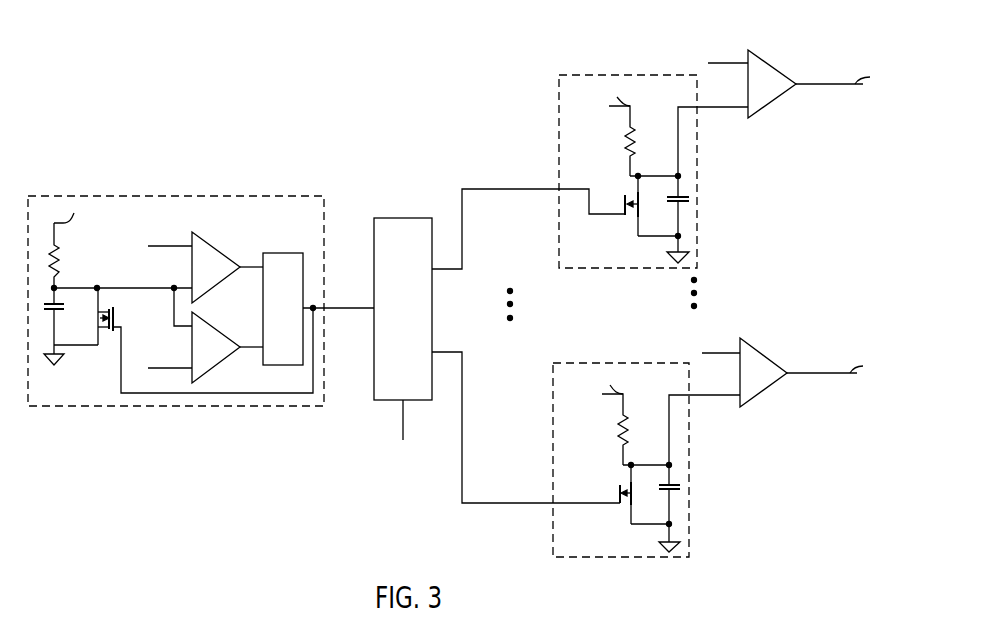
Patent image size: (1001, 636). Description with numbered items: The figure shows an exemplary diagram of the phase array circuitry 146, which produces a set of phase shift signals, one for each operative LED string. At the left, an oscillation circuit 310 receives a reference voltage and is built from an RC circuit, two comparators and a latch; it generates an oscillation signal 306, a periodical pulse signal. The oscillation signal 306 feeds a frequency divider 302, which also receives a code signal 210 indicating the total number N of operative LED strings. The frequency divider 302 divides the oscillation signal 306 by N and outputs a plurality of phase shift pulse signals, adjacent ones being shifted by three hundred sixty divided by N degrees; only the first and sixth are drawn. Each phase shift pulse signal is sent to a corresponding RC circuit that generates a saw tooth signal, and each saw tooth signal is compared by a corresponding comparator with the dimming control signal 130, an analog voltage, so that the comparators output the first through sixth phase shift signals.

The phase array circuitry 146 is at (94, 95).
The oscillation circuit 310 is at (166, 196).
The oscillation signal 306 is at (328, 308).
The frequency divider 302 is at (417, 316).
The code signal 210 is at (404, 419).
The dimming control signal 130 is at (737, 63).